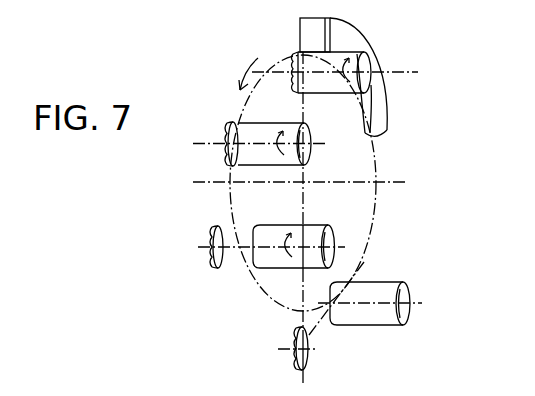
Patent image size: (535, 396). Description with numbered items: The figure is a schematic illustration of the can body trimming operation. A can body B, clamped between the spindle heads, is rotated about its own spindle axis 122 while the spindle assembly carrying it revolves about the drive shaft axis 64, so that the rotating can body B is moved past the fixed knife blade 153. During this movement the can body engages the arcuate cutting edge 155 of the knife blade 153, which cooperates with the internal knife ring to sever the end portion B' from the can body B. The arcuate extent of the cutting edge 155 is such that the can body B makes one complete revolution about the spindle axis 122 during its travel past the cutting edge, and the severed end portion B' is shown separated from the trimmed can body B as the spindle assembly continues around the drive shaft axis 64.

The can body B is at (327, 170).
The end portion B' is at (240, 203).
The spindle axis 122 is at (406, 72).
The knife blade 153 is at (379, 99).
The cutting edge 155 is at (373, 150).
The drive shaft axis 64 is at (406, 182).